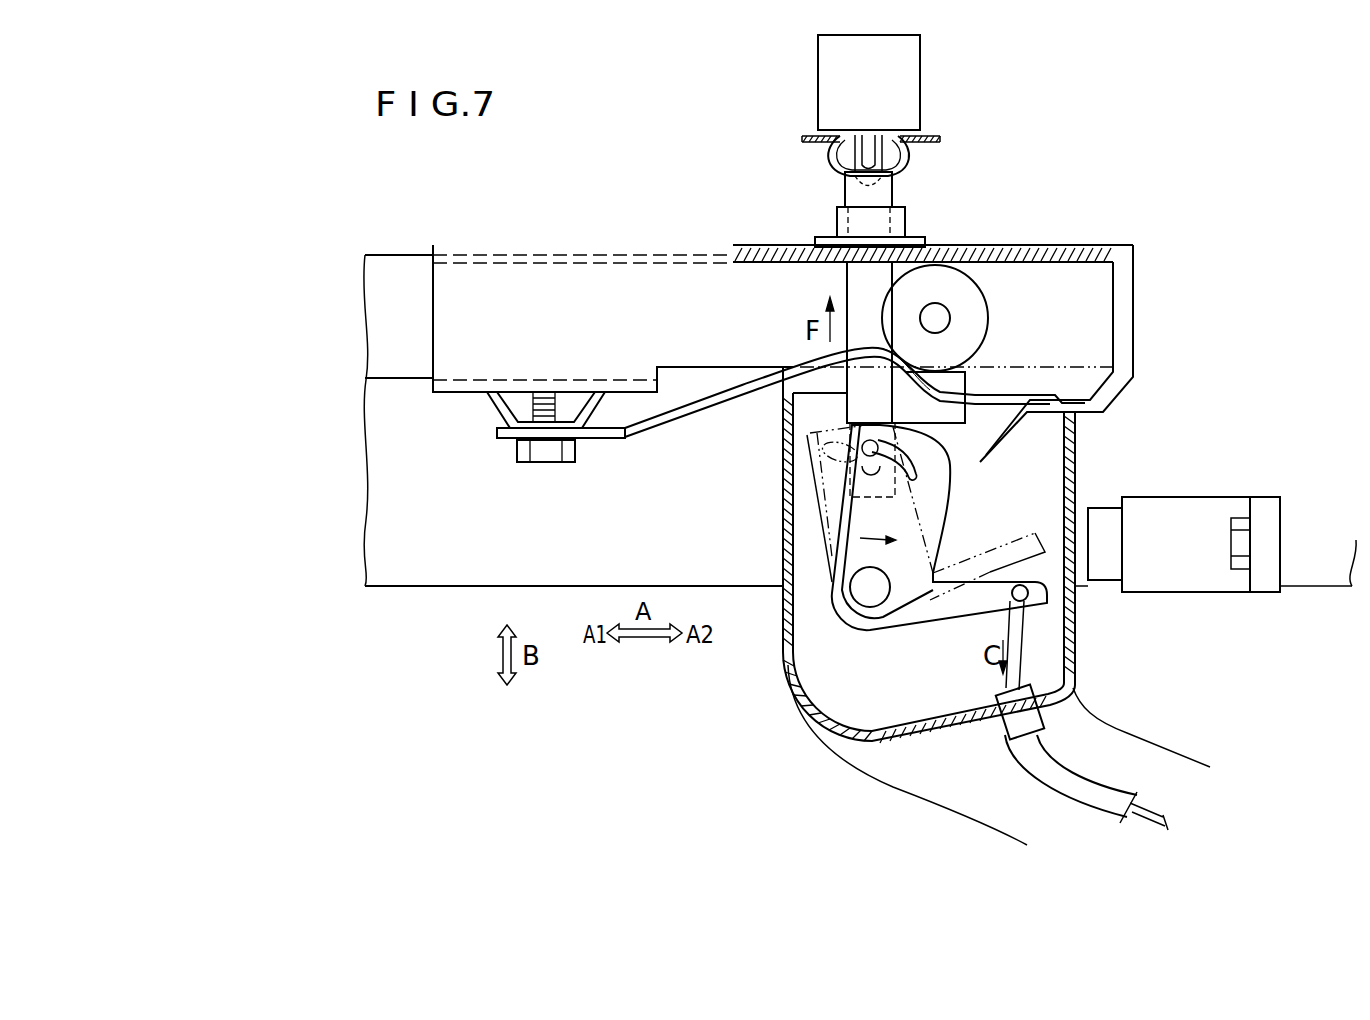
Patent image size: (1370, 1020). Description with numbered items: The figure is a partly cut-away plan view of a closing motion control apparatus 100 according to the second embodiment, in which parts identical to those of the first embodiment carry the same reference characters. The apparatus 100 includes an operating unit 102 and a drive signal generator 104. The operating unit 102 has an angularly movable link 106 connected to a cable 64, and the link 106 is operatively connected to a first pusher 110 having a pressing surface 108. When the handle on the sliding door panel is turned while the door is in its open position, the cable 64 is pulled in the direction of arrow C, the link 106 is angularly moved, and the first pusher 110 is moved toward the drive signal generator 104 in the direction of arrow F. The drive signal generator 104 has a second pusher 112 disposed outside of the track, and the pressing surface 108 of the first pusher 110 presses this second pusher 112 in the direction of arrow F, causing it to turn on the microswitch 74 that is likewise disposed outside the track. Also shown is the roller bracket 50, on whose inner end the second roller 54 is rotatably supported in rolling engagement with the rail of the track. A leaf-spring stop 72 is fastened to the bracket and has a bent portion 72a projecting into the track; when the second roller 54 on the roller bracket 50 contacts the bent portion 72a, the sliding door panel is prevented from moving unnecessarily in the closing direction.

The closing motion control apparatus 100 is at (1118, 102).
The microswitch 74 is at (830, 86).
The drive signal generator 104 is at (893, 191).
The second pusher 112 is at (852, 172).
The pressing surface 108 is at (900, 172).
The first pusher 110 is at (857, 286).
The second roller 54 is at (974, 308).
The leaf-spring stop 72 is at (855, 393).
The bent portion 72a is at (890, 347).
The operating unit 102 is at (813, 511).
The link 106 is at (944, 532).
The cable 64 is at (1165, 810).
The roller bracket 50 is at (968, 821).